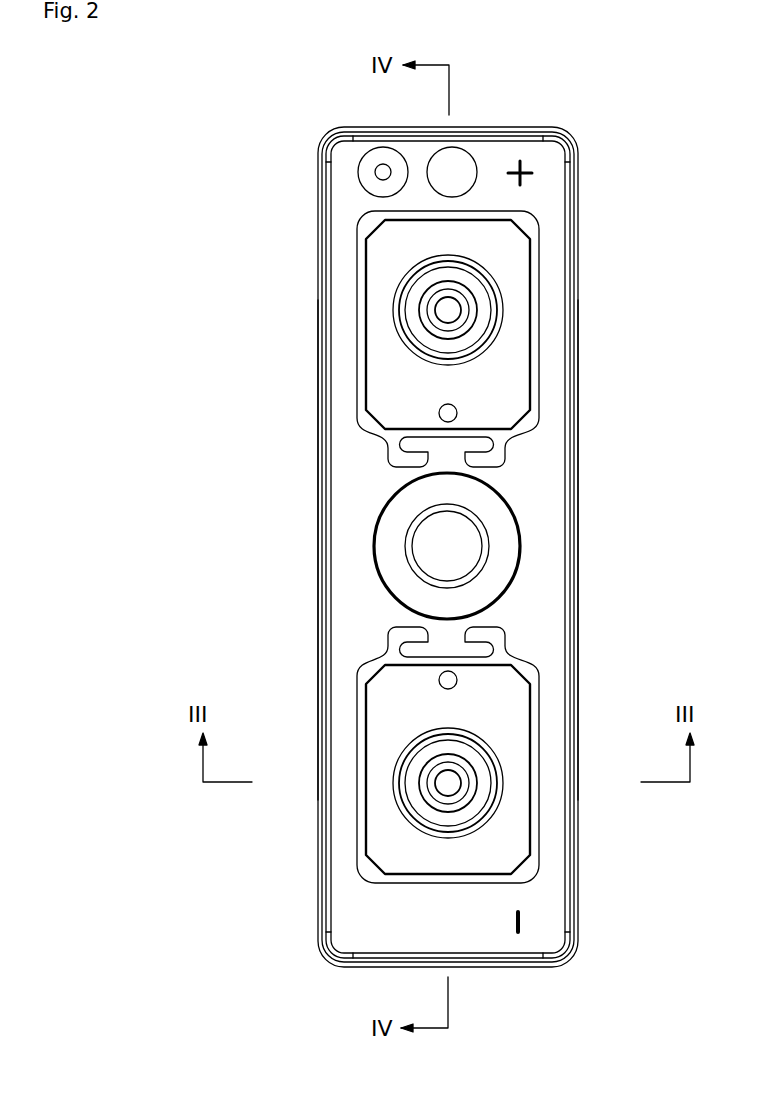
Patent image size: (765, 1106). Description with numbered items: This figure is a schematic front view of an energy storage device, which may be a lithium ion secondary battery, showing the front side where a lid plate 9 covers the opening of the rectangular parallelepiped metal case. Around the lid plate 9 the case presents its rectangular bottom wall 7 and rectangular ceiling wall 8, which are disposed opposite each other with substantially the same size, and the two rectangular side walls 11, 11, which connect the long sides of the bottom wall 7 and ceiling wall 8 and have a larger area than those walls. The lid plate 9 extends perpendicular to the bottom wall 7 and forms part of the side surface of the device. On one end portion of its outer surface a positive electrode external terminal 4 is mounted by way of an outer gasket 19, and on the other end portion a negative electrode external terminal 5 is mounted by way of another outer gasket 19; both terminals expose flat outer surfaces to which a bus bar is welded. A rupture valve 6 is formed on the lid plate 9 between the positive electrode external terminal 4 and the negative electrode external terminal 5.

The positive electrode external terminal 4 is at (382, 268).
The negative electrode external terminal 5 is at (380, 708).
The rupture valve 6 is at (508, 543).
The bottom wall 7 is at (373, 967).
The ceiling wall 8 is at (385, 128).
The lid plate 9 is at (347, 467).
The side wall 11 is at (317, 547).
The outer gasket 19 is at (367, 225).